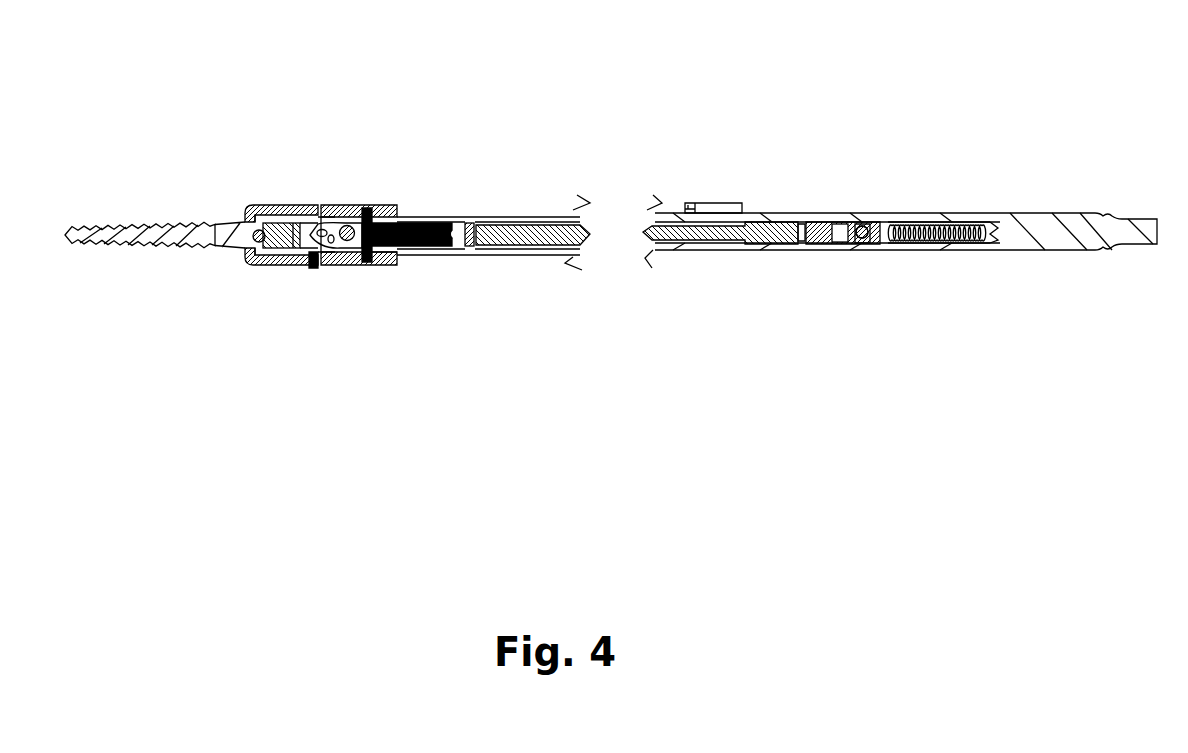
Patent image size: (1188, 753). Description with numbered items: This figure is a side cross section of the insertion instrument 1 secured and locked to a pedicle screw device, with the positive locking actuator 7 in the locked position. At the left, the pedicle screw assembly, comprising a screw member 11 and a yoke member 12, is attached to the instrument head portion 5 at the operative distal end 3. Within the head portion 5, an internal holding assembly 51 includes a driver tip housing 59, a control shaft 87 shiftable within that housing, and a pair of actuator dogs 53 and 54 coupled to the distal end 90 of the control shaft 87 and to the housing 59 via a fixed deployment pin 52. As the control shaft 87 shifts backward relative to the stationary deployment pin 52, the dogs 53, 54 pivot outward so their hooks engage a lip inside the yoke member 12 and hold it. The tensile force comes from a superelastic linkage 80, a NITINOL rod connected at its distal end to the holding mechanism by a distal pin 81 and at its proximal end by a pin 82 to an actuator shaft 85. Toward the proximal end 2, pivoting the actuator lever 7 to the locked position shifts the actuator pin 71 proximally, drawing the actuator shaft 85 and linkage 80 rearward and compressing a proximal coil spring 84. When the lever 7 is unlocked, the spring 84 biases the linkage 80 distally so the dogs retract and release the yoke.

The insertion instrument 1 is at (712, 55).
The proximal end 2 is at (1122, 104).
The operative distal end 3 is at (372, 94).
The head portion 5 is at (342, 192).
The actuator lever 7 is at (716, 203).
The screw member 11 is at (188, 250).
The yoke member 12 is at (272, 265).
The internal holding assembly 51 is at (313, 270).
The deployment pin 52 is at (318, 226).
The actuator dog 53 is at (340, 248).
The actuator dog 54 is at (324, 215).
The driver tip housing 59 is at (372, 265).
The actuator pin 71 is at (866, 224).
The superelastic linkage 80 is at (555, 228).
The distal pin 81 is at (467, 248).
The pin 82 is at (820, 220).
The proximal coil spring 84 is at (955, 220).
The actuator shaft 85 is at (860, 226).
The control shaft 87 is at (423, 219).
The distal end of the control shaft 90 is at (368, 222).